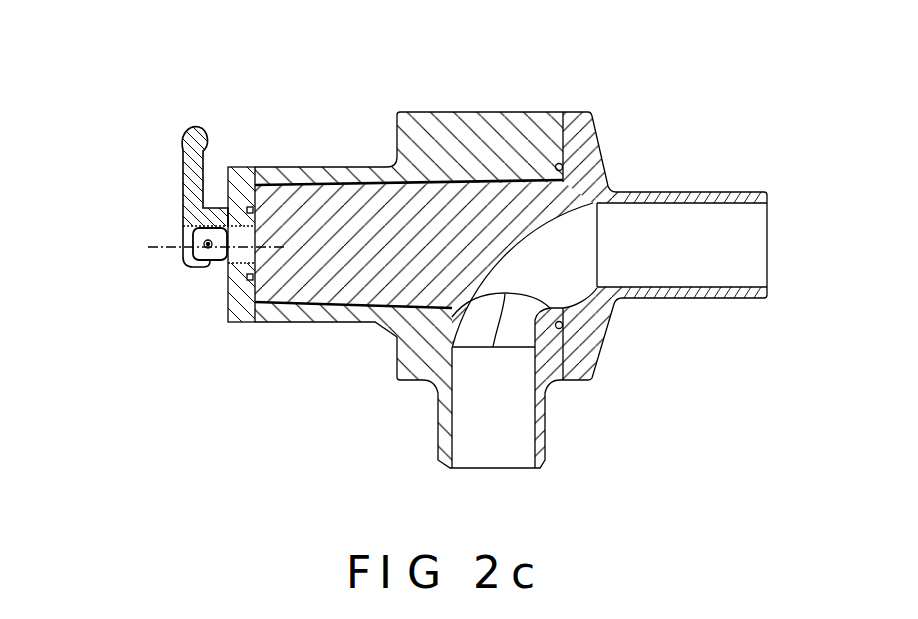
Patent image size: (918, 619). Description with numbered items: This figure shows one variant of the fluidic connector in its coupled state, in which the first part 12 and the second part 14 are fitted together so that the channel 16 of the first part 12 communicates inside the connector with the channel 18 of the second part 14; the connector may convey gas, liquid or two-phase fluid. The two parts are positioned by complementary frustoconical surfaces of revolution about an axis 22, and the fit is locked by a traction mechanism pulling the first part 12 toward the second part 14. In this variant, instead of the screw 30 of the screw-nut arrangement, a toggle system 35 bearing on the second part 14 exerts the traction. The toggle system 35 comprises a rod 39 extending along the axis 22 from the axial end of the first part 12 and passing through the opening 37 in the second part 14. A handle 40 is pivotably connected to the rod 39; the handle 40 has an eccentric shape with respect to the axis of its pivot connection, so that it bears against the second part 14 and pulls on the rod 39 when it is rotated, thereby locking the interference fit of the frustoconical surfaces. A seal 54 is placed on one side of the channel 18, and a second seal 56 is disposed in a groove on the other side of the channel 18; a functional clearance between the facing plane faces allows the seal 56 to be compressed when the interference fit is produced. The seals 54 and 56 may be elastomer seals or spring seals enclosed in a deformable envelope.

The first part 12 is at (612, 159).
The second part 14 is at (477, 135).
The channel 16 is at (715, 259).
The channel 18 is at (504, 431).
The axis 22 is at (175, 248).
The screw 30 is at (270, 275).
The toggle system 35 is at (140, 197).
The opening 37 is at (228, 283).
The rod 39 is at (183, 237).
The handle 40 is at (183, 187).
The seal 54 is at (230, 192).
The second seal 56 is at (562, 167).